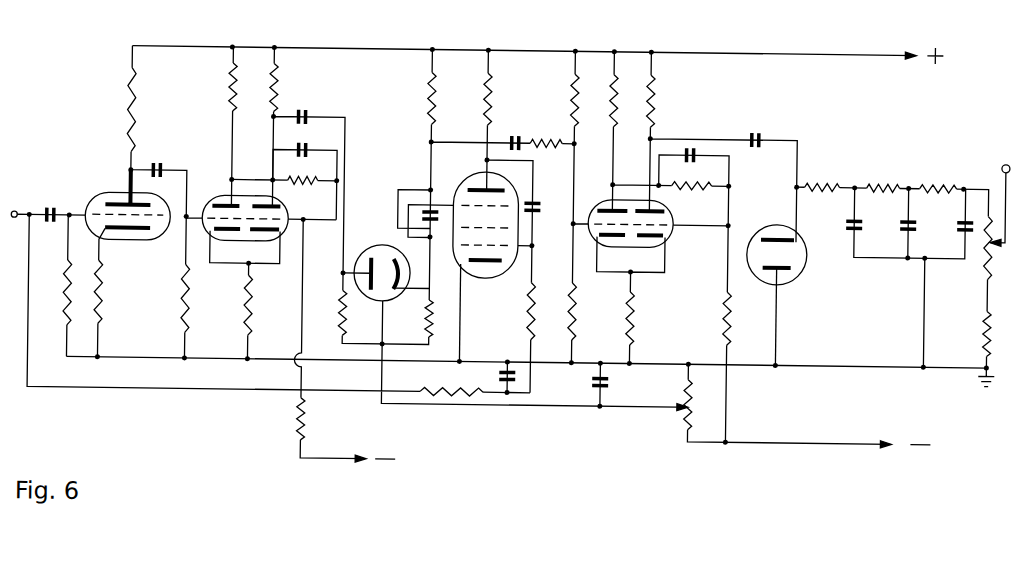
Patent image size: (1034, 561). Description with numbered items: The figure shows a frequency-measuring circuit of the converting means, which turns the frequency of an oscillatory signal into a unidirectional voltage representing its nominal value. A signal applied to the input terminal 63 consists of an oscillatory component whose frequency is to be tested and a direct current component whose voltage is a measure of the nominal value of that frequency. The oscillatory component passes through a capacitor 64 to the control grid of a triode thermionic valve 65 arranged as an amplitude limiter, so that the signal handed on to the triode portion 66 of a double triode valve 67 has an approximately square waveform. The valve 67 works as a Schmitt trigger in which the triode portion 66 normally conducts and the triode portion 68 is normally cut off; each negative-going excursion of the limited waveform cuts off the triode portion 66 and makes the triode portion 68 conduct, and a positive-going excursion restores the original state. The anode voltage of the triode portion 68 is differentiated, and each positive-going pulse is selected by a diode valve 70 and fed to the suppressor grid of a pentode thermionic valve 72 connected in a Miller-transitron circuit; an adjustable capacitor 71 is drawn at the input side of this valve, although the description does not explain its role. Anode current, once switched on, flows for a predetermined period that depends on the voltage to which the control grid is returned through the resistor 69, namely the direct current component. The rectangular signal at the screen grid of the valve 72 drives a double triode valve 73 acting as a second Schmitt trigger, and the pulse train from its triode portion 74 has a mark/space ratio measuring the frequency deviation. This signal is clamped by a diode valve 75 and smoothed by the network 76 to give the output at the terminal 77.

The input terminal 63 is at (17, 211).
The capacitor 64 is at (56, 205).
The triode thermionic valve 65 is at (96, 194).
The triode portion 66 is at (211, 214).
The double triode valve 67 is at (228, 200).
The triode portion 68 is at (291, 212).
The resistor 69 is at (515, 318).
The diode valve 70 is at (386, 294).
The adjustable capacitor 71 is at (424, 211).
The pentode thermionic valve 72 is at (510, 187).
The double triode valve 73 is at (601, 205).
The triode portion 74 is at (674, 232).
The diode valve 75 is at (799, 276).
The network 76 is at (893, 253).
The terminal 77 is at (989, 254).